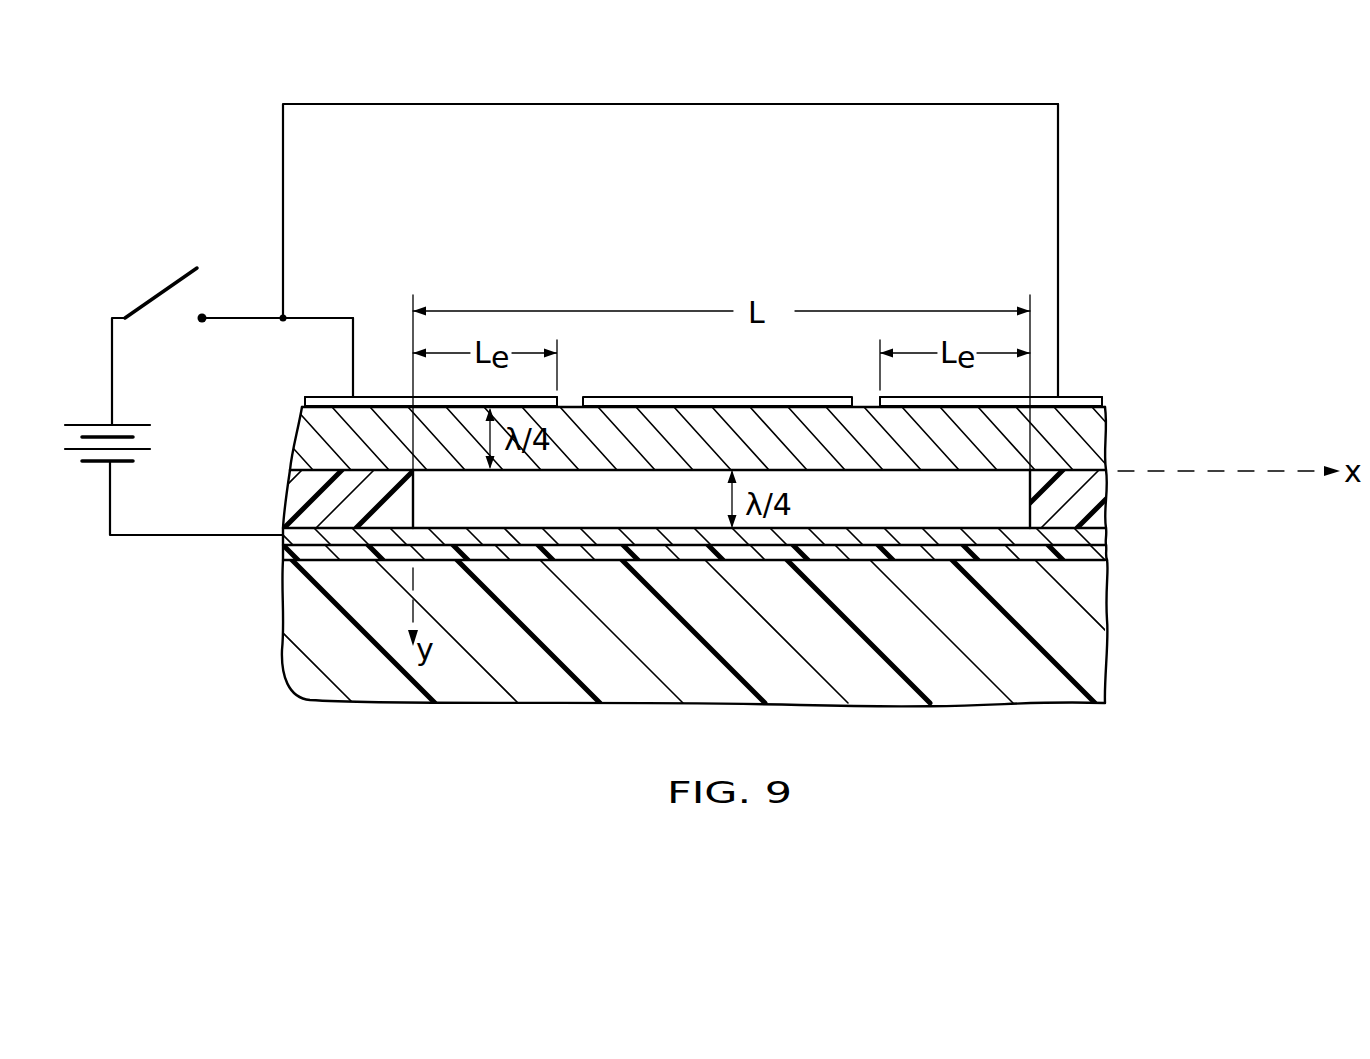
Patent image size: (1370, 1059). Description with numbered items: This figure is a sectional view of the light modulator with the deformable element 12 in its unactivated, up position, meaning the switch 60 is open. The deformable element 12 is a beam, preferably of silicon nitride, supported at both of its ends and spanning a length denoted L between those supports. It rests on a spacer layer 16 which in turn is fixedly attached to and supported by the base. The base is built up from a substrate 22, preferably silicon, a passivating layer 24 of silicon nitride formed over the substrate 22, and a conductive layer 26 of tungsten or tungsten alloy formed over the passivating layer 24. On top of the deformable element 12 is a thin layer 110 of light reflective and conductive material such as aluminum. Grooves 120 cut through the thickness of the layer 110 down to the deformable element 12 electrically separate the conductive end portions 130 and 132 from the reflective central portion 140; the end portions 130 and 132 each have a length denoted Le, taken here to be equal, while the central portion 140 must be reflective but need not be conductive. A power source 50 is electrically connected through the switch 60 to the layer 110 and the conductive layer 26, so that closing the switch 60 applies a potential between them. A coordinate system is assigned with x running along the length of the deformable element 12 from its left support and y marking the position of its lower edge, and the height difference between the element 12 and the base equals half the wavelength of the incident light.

The deformable element 12 is at (1098, 448).
The spacer layer 16 is at (291, 498).
The substrate 22 is at (1092, 632).
The passivating layer 24 is at (1110, 553).
The conductive layer 26 is at (1108, 538).
The power source 50 is at (98, 476).
The switch 60 is at (162, 290).
The thin layer of light reflective and conductive material 110 is at (1073, 400).
The grooves 120 is at (560, 401).
The conductive end portion 130 is at (381, 397).
The conductive end portion 132 is at (978, 398).
The central portion 140 is at (700, 400).